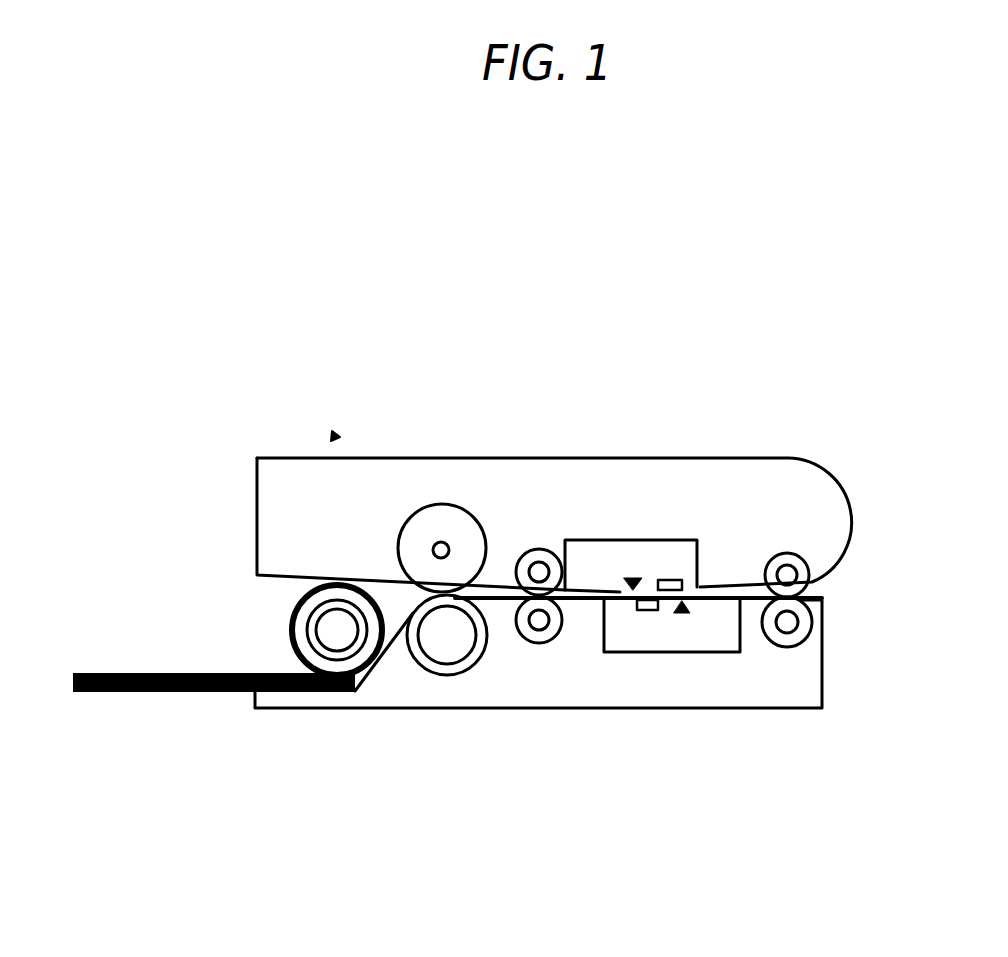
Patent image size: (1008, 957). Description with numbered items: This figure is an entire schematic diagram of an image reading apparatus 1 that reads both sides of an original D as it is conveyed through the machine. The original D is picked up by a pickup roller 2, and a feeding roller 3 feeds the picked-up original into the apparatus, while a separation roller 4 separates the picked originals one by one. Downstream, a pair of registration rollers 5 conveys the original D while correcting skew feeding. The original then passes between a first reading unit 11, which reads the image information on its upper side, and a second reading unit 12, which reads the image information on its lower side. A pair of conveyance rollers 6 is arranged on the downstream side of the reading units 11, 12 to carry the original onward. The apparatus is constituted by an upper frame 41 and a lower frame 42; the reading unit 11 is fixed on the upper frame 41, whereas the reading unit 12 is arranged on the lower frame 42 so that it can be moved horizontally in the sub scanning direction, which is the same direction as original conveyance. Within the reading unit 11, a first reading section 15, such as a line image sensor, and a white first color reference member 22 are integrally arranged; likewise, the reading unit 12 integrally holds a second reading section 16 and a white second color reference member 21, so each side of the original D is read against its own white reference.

The image reading apparatus 1 is at (332, 389).
The pickup roller 2 is at (289, 573).
The feeding roller 3 is at (442, 485).
The separation roller 4 is at (434, 686).
The registration rollers 5 is at (509, 579).
The conveyance rollers 6 is at (823, 609).
The first reading unit 11 is at (631, 491).
The second reading unit 12 is at (672, 689).
The first reading section 15 is at (605, 475).
The second reading section 16 is at (734, 689).
The second color reference member 21 is at (647, 686).
The first color reference member 22 is at (672, 466).
The upper frame 41 is at (554, 474).
The lower frame 42 is at (538, 708).
The original D is at (158, 672).